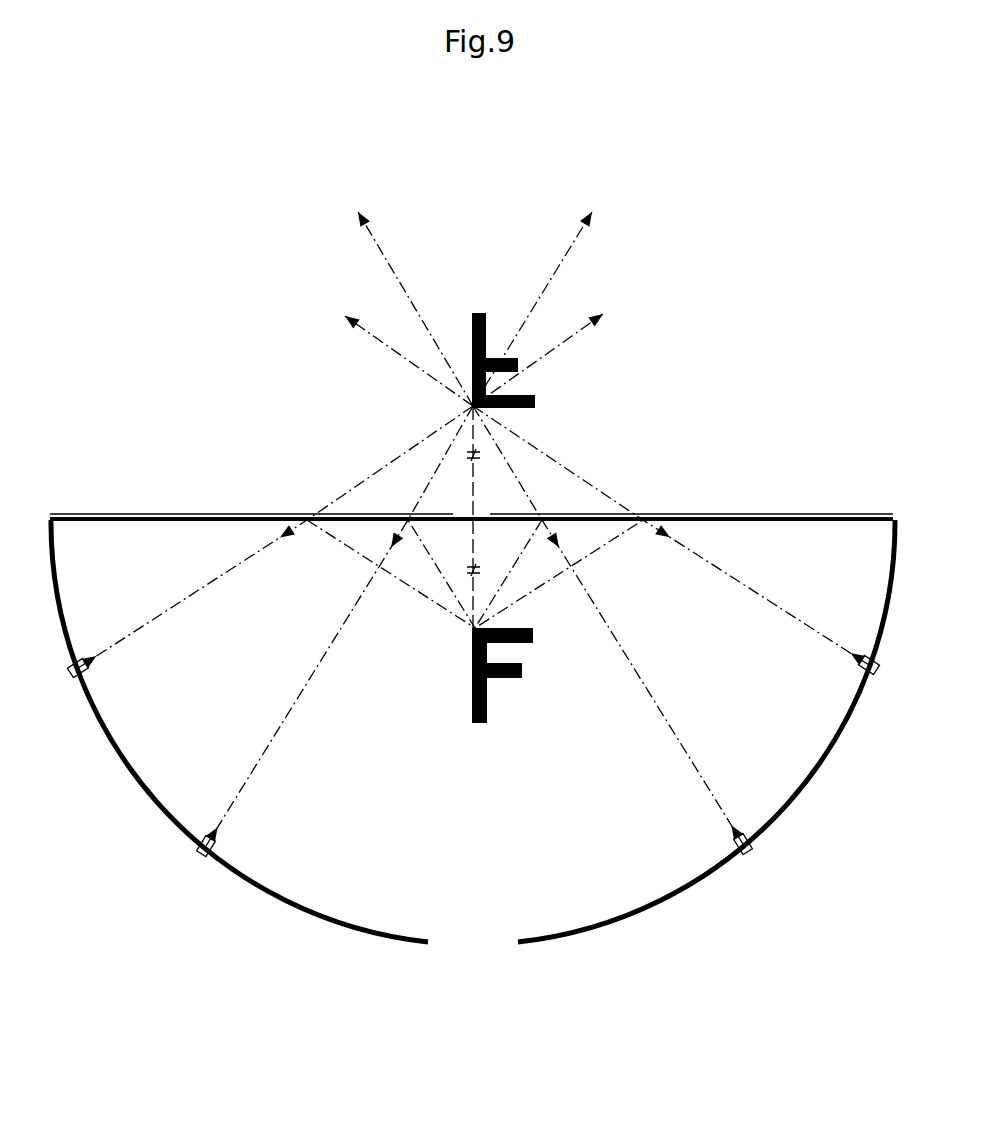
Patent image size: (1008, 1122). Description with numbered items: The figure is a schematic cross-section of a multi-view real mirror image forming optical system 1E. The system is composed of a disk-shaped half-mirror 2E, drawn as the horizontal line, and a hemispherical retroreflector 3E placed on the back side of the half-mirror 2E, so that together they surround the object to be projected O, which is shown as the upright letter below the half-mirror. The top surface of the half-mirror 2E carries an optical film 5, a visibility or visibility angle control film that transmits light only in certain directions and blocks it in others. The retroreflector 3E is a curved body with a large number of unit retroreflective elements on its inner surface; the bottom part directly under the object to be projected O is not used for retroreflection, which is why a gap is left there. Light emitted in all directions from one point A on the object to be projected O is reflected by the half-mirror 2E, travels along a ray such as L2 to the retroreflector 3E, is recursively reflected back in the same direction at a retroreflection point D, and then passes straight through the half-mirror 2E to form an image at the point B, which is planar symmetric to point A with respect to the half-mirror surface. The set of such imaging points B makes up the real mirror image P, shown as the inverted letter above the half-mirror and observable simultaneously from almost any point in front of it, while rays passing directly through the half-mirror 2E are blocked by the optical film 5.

The real mirror image forming optical system 1E is at (704, 340).
The half-mirror 2E is at (797, 521).
The retroreflector 3E is at (237, 883).
The optical film 5 is at (80, 516).
The point on the object to be projected A is at (470, 630).
The imaging point B is at (473, 405).
The object to be projected O is at (495, 727).
The real mirror image P is at (503, 318).
The light ray L2 is at (473, 626).
The retroreflection point D is at (460, 775).